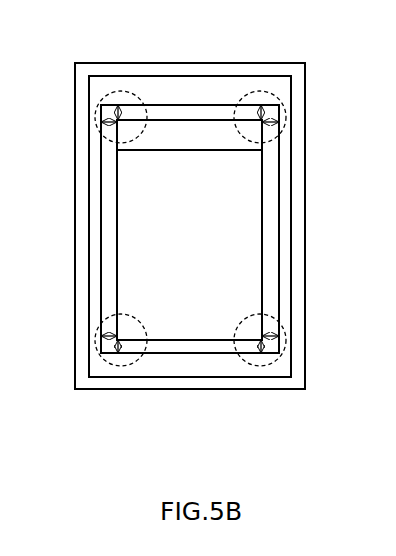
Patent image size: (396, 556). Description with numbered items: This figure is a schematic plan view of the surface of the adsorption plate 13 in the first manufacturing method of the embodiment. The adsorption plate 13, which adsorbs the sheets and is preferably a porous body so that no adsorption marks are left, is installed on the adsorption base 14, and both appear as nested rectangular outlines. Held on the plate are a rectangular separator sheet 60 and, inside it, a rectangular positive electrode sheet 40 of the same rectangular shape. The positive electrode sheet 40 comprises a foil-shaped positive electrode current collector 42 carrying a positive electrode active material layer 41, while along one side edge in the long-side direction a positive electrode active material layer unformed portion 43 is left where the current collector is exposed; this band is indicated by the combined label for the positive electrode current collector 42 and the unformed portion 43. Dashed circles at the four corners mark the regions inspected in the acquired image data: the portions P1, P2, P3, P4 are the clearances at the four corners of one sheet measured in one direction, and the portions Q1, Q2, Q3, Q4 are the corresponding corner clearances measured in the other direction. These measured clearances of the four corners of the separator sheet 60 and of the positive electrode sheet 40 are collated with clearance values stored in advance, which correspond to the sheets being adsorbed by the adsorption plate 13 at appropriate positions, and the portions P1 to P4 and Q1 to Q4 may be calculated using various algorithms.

The adsorption plate 13 is at (152, 378).
The adsorption base 14 is at (230, 390).
The positive electrode sheet 40 is at (264, 208).
The positive electrode active material layer 41 is at (252, 254).
The positive electrode current collector 42 is at (189, 89).
The positive electrode active material layer unformed portion 43 is at (181, 128).
The separator sheet 60 is at (101, 209).
The portion P1 is at (117, 108).
The portion P2 is at (264, 108).
The portion P3 is at (262, 350).
The portion P4 is at (118, 350).
The portion Q1 is at (108, 124).
The portion Q2 is at (272, 124).
The portion Q3 is at (272, 336).
The portion Q4 is at (108, 336).